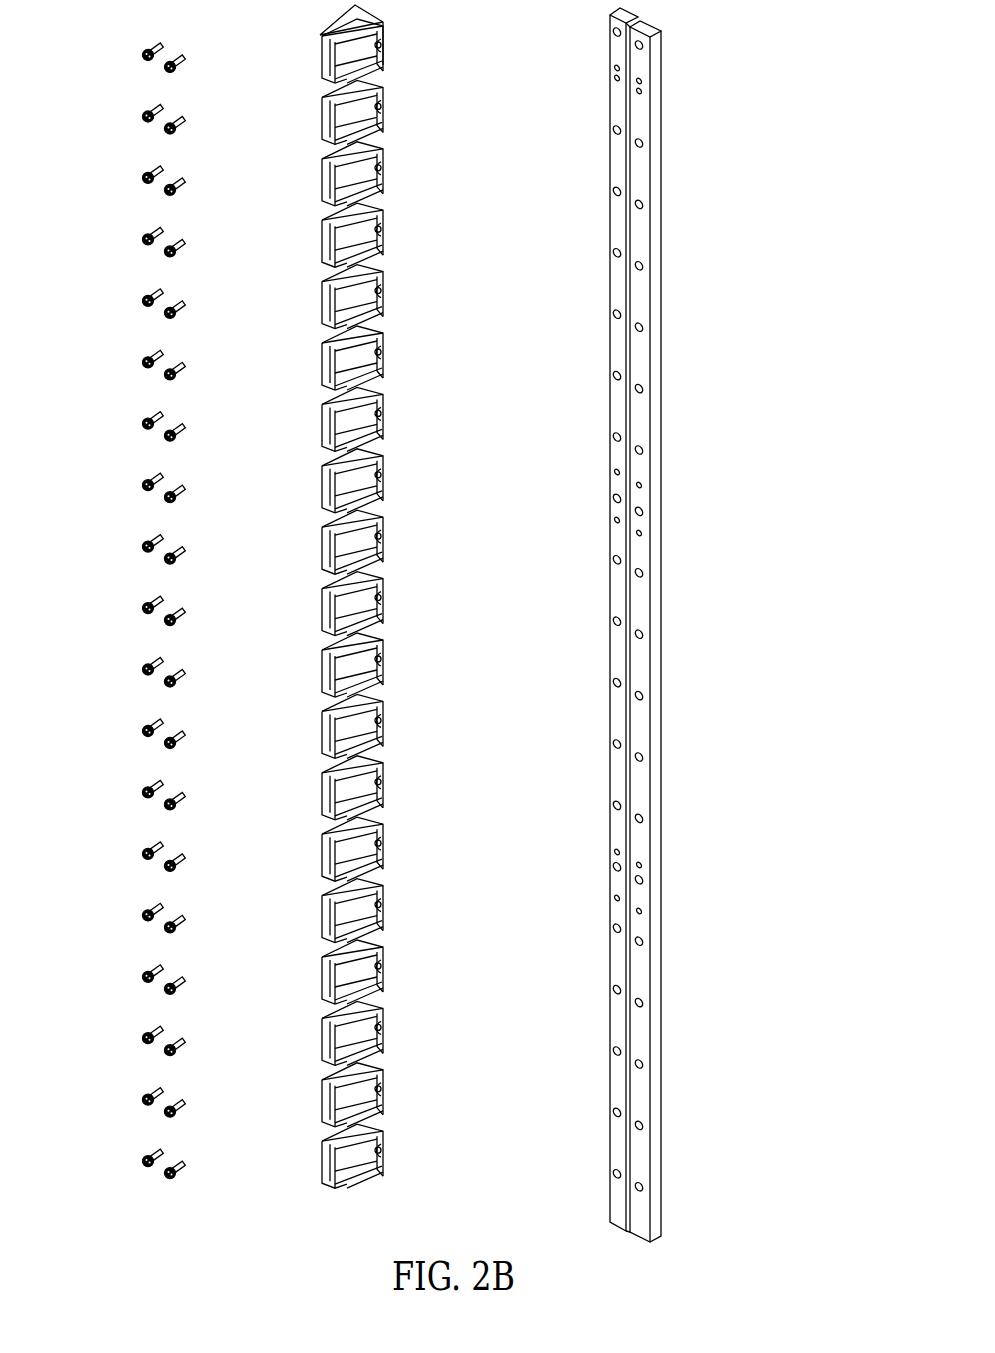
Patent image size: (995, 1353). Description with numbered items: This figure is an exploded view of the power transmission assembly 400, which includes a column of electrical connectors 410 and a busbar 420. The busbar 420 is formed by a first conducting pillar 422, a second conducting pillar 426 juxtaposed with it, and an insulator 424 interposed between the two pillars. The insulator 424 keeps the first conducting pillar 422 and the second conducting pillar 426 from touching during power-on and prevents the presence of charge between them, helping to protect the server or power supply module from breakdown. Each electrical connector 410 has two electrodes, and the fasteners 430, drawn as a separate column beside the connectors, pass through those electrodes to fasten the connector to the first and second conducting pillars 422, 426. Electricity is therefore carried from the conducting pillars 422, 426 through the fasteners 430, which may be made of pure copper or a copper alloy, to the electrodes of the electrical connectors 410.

The power transmission assembly 400 is at (460, 623).
The electrical connector 410 is at (345, 427).
The busbar 420 is at (698, 465).
The first conducting pillar 422 is at (620, 172).
The insulator 424 is at (628, 295).
The second conducting pillar 426 is at (642, 245).
The fasteners 430 is at (142, 238).